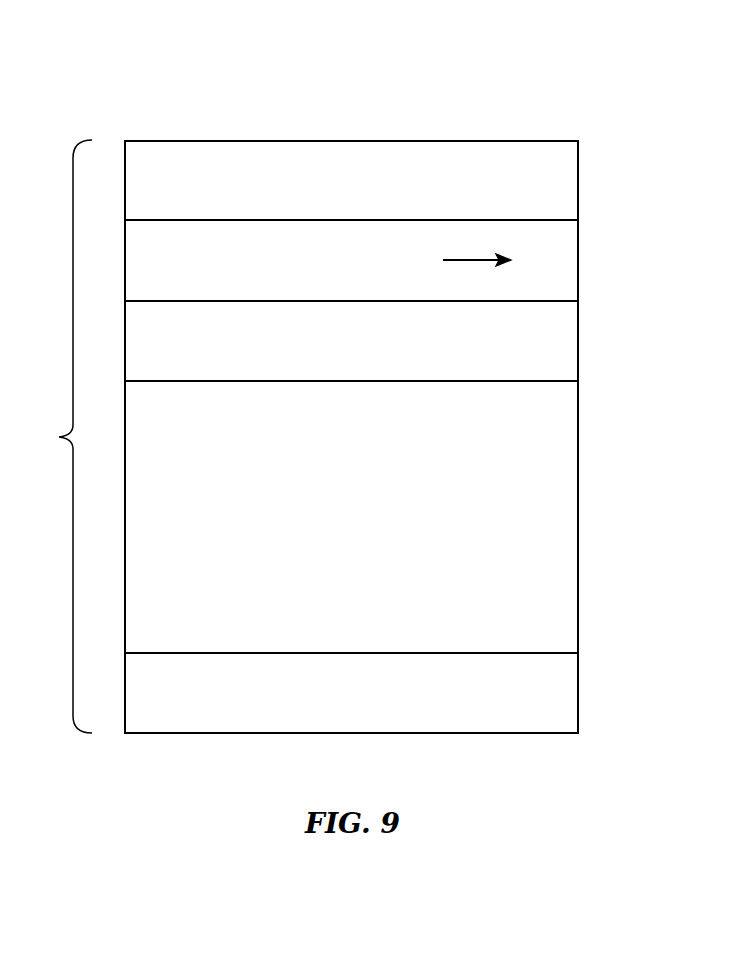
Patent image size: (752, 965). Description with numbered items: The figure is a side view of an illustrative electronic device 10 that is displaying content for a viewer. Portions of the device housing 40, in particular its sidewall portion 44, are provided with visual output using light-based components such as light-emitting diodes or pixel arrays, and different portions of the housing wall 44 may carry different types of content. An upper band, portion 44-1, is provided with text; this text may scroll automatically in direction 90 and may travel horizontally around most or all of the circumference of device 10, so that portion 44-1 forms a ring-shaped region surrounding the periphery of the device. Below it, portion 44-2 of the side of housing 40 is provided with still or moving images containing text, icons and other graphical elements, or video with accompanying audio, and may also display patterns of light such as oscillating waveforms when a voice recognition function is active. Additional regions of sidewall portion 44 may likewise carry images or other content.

The electronic device 10 is at (510, 86).
The device housing 40 is at (579, 177).
The sidewall portion 44 is at (63, 436).
The text portion 44-1 is at (579, 259).
The graphics and video portion 44-2 is at (579, 517).
The scroll direction 90 is at (478, 263).